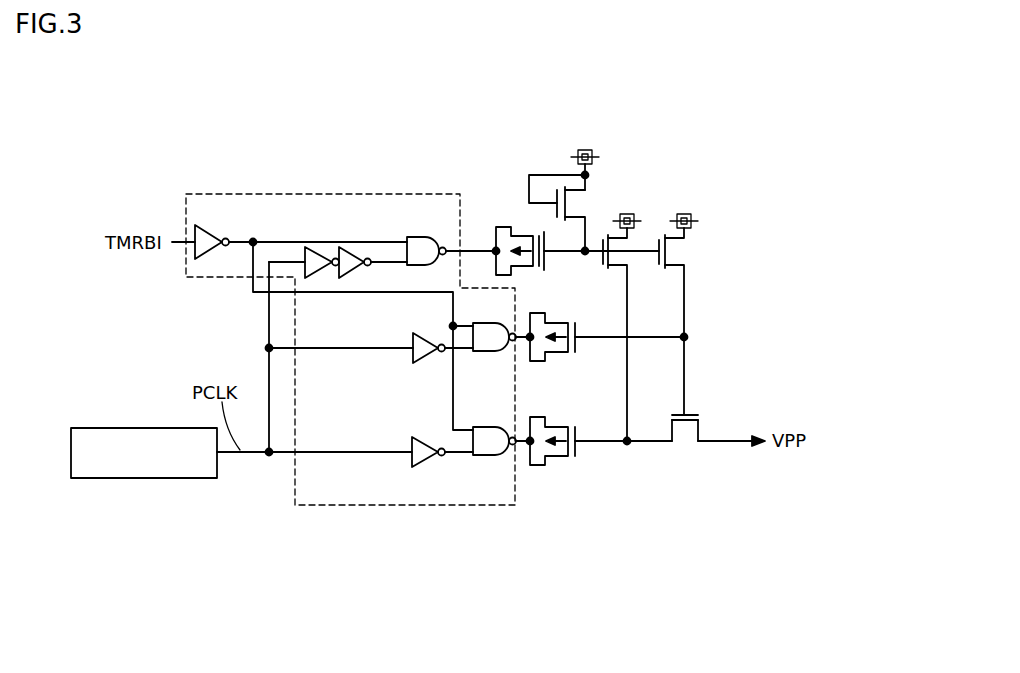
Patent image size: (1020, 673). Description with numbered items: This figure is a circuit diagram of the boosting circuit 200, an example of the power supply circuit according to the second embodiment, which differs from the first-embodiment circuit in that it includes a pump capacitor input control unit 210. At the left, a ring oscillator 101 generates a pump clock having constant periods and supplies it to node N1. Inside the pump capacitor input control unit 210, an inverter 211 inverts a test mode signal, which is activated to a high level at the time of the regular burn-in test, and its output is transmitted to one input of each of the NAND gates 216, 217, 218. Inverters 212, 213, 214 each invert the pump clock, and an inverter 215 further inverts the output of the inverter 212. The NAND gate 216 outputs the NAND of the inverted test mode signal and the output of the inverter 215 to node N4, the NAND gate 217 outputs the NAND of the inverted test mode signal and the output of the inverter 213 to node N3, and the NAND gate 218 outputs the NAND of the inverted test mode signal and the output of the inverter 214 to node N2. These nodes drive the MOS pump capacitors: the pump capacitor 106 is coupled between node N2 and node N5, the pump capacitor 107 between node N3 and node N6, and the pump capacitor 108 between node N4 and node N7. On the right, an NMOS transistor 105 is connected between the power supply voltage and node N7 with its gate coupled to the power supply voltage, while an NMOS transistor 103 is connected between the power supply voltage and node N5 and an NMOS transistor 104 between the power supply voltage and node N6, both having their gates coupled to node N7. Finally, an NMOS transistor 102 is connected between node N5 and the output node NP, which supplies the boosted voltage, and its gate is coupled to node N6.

The boosting circuit 200 is at (762, 110).
The pump capacitor input control unit 210 is at (358, 193).
The ring oscillator 101 is at (165, 481).
The NMOS transistor 102 is at (688, 432).
The NMOS transistor 103 is at (622, 258).
The NMOS transistor 104 is at (678, 250).
The NMOS transistor 105 is at (587, 199).
The pump capacitor 106 is at (568, 429).
The pump capacitor 107 is at (562, 321).
The pump capacitor 108 is at (505, 227).
The inverter 211 is at (213, 234).
The inverter 212 is at (318, 279).
The inverter 213 is at (420, 365).
The inverter 214 is at (430, 468).
The inverter 215 is at (350, 279).
The NAND gate 216 is at (418, 268).
The NAND gate 217 is at (485, 353).
The NAND gate 218 is at (487, 457).
The node N1 is at (250, 460).
The node N2 is at (523, 445).
The node N3 is at (524, 340).
The node N4 is at (474, 248).
The node N5 is at (645, 446).
The node N6 is at (689, 350).
The node N7 is at (568, 255).
The node NP is at (730, 446).